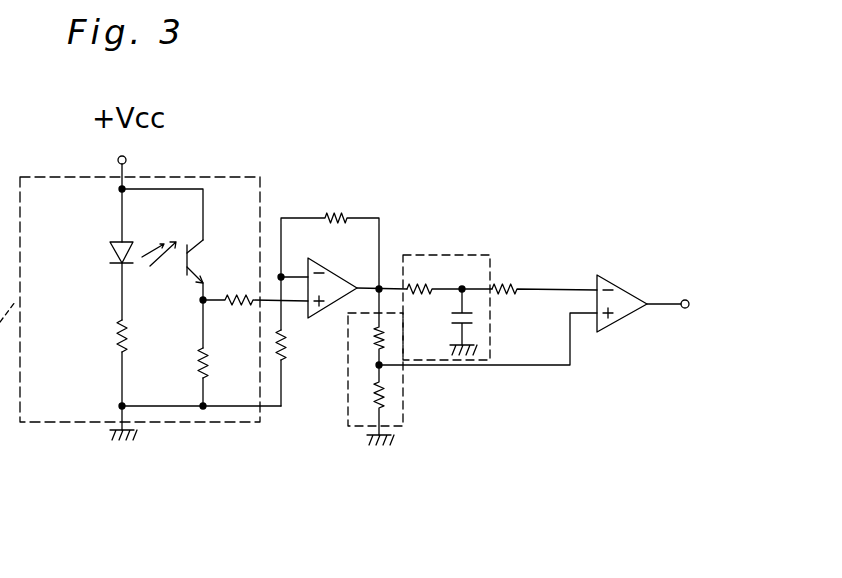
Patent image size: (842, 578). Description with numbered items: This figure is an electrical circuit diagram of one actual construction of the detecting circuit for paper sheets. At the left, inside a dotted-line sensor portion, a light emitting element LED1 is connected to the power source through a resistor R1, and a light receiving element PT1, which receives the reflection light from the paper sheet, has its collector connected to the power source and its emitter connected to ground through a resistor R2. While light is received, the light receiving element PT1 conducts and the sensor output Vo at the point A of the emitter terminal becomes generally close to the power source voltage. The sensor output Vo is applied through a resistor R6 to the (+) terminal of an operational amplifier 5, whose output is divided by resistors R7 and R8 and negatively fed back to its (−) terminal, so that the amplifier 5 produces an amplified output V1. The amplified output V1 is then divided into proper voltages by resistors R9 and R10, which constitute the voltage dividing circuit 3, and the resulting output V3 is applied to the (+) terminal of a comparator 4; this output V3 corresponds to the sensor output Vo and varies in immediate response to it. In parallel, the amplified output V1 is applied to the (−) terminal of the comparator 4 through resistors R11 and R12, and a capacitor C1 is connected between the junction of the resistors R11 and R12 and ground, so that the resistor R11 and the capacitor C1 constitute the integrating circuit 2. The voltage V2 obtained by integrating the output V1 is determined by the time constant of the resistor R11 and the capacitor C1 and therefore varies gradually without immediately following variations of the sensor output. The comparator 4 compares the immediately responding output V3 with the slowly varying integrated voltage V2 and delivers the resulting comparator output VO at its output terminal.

The integrating circuit 2 is at (452, 255).
The voltage dividing circuit 3 is at (345, 427).
The comparator 4 is at (625, 312).
The operational amplifier 5 is at (335, 300).
The light emitting element LED1 is at (110, 260).
The light receiving element PT1 is at (196, 250).
The resistor R1 is at (120, 333).
The resistor R2 is at (200, 362).
The resistor R6 is at (245, 297).
The resistor R7 is at (340, 215).
The resistor R8 is at (280, 336).
The resistor R9 is at (382, 340).
The resistor R10 is at (382, 400).
The resistor R11 is at (422, 287).
The resistor R12 is at (508, 287).
The capacitor C1 is at (470, 325).
The point A is at (203, 300).
The sensor output Vo is at (203, 300).
The amplified output V1 is at (376, 286).
The integrated voltage V2 is at (570, 263).
The output of the voltage dividing circuit V3 is at (378, 365).
The comparator output VO is at (713, 305).